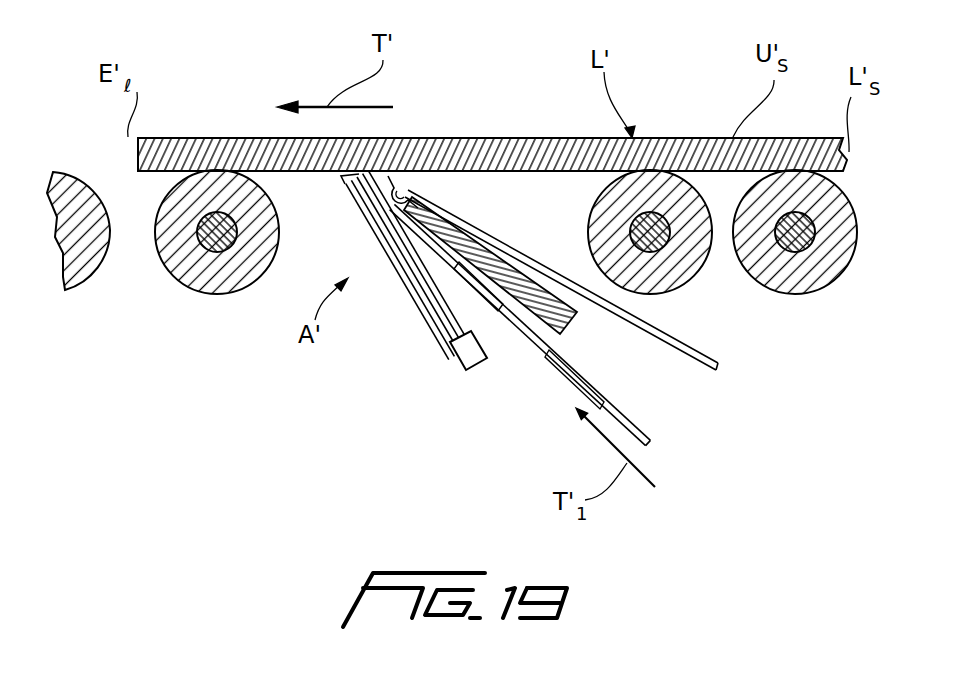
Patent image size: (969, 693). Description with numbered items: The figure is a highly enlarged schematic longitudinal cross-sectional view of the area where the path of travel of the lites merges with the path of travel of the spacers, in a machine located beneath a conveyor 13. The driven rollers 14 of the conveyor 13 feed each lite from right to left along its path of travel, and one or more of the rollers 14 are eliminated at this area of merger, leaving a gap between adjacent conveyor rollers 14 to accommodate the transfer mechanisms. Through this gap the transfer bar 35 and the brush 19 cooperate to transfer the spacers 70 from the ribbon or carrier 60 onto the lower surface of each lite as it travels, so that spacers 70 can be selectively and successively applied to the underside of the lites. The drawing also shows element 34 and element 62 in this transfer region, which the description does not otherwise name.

The driven rollers 14 is at (85, 278).
The conveyor 13 is at (846, 295).
The spacers 70 is at (391, 179).
The brush 19 is at (436, 332).
The fold 34 is at (420, 194).
The transfer bar 35 is at (557, 320).
The upper strip 62 is at (702, 367).
The ribbon 60 is at (664, 435).